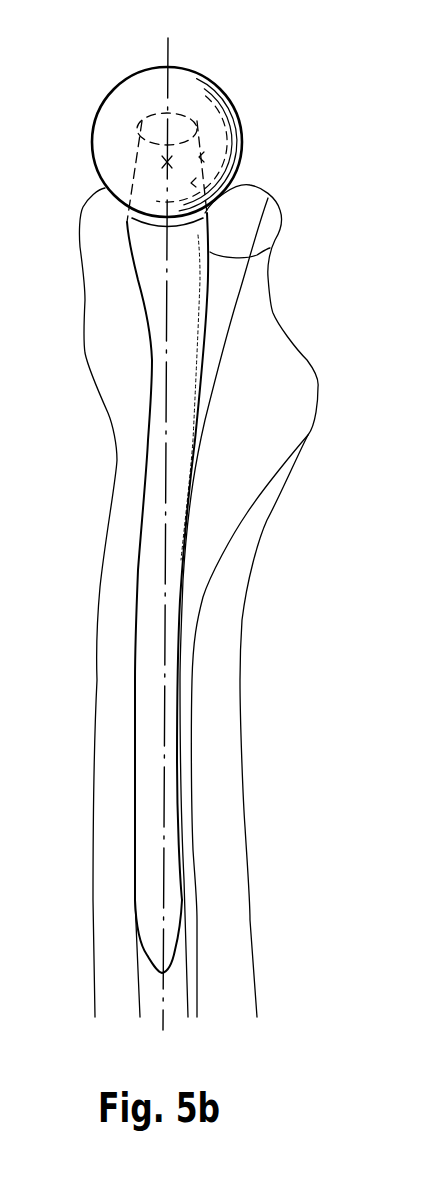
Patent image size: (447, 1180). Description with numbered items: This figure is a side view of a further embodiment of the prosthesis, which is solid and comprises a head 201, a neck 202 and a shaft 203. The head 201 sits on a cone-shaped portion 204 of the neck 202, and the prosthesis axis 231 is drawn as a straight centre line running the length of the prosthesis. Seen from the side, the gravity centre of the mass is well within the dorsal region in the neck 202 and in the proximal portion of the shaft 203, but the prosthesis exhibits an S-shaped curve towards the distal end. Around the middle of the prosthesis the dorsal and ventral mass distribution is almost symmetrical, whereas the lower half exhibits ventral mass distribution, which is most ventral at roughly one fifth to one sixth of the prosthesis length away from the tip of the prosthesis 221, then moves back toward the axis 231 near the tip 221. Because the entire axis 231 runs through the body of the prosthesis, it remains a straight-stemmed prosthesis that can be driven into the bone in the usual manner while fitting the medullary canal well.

The prosthesis axis 231 is at (170, 62).
The head 201 is at (228, 96).
The cone-shaped portion 204 is at (228, 138).
The neck 202 is at (270, 248).
The shaft 203 is at (135, 745).
The tip of the prosthesis 221 is at (162, 974).